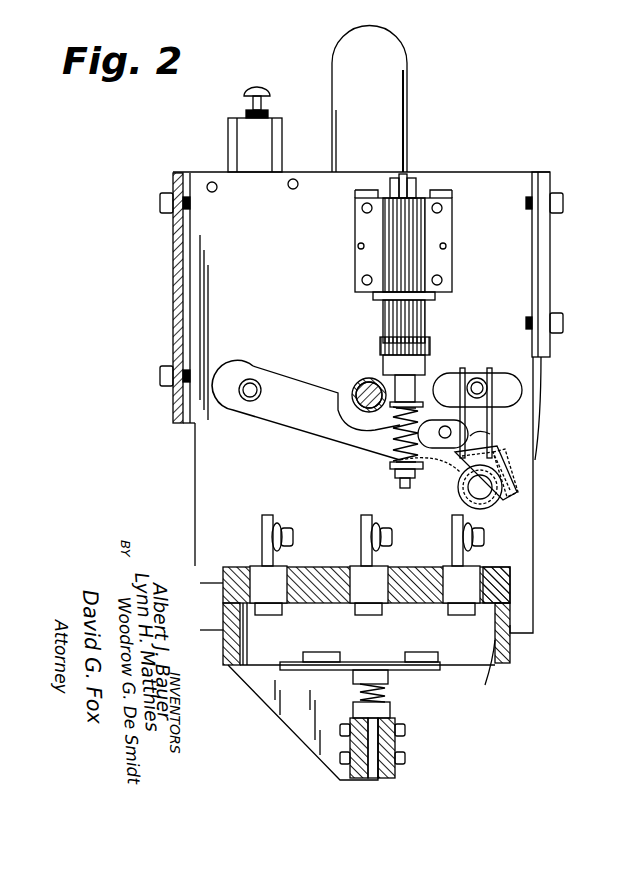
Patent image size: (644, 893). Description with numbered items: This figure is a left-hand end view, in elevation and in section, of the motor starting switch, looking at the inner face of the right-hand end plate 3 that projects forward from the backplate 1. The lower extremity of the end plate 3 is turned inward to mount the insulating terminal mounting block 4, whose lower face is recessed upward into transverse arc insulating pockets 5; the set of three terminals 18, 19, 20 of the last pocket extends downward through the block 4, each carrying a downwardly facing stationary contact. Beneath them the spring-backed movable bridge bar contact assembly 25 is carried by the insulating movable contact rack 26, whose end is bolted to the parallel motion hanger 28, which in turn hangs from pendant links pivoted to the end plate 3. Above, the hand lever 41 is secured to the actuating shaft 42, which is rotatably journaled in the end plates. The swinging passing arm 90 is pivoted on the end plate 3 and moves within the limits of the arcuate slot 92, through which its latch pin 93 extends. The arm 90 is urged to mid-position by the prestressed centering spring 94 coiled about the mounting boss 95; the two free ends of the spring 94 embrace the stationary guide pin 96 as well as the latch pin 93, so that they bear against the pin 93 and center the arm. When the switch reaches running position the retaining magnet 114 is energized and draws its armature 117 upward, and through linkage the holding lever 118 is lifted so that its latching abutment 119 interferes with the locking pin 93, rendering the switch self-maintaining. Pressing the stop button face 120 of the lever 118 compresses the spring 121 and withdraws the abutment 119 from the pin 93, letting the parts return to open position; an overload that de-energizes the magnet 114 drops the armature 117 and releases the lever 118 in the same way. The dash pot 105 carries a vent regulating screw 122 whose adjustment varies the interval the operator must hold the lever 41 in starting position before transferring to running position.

The backplate 1 is at (173, 310).
The right-hand end plate 3 is at (518, 512).
The terminal mounting block 4 is at (223, 588).
The arc insulating pocket 5 is at (496, 633).
The terminal 18 is at (463, 575).
The terminal 19 is at (377, 575).
The terminal 20 is at (277, 575).
The movable bridge bar contact assembly 25 is at (400, 670).
The movable contact rack 26 is at (388, 780).
The parallel motion hanger 28 is at (300, 728).
The hand lever 41 is at (390, 99).
The actuating shaft 42 is at (364, 378).
The swinging passing arm 90 is at (461, 380).
The arcuate slot 92 is at (500, 381).
The latch pin 93 is at (488, 376).
The centering spring 94 is at (500, 448).
The mounting boss 95 is at (458, 493).
The guide pin 96 is at (478, 440).
The dash pot 105 is at (228, 150).
The retaining magnet 114 is at (452, 238).
The armature 117 is at (430, 308).
The holding lever 118 is at (313, 428).
The latching abutment 119 is at (492, 420).
The stop button face 120 is at (510, 478).
The spring 121 is at (398, 450).
The vent regulating screw 122 is at (262, 103).